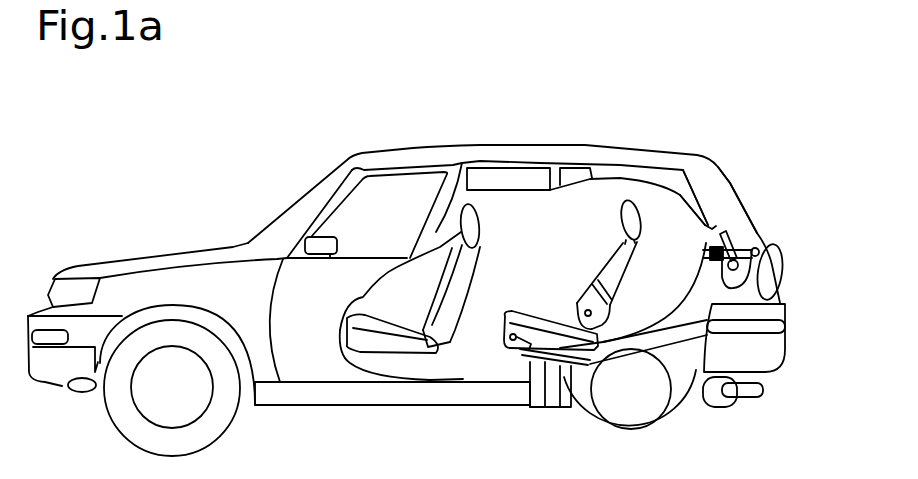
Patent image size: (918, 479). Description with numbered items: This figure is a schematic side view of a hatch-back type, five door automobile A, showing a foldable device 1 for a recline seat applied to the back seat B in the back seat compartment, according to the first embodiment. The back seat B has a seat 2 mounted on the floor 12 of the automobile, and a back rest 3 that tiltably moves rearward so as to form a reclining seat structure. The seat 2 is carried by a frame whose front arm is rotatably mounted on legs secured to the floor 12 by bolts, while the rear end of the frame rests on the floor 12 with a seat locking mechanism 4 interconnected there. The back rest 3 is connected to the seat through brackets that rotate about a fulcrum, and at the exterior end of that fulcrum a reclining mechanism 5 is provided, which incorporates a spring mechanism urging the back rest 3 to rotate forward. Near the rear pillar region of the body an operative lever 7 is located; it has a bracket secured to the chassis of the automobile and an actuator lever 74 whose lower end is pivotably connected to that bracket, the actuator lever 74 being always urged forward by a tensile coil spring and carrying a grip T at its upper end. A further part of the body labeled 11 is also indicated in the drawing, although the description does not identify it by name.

The automobile A is at (268, 217).
The back seat B is at (583, 256).
The foldable device 1 is at (715, 219).
The rear pillar 11 is at (723, 186).
The seat 2 is at (526, 318).
The back rest 3 is at (638, 256).
The seat locking mechanism 4 is at (566, 383).
The reclining mechanism 5 is at (612, 298).
The operative lever 7 is at (702, 240).
The floor 12 is at (540, 357).
The grip T is at (726, 233).
The actuator lever 74 is at (756, 249).